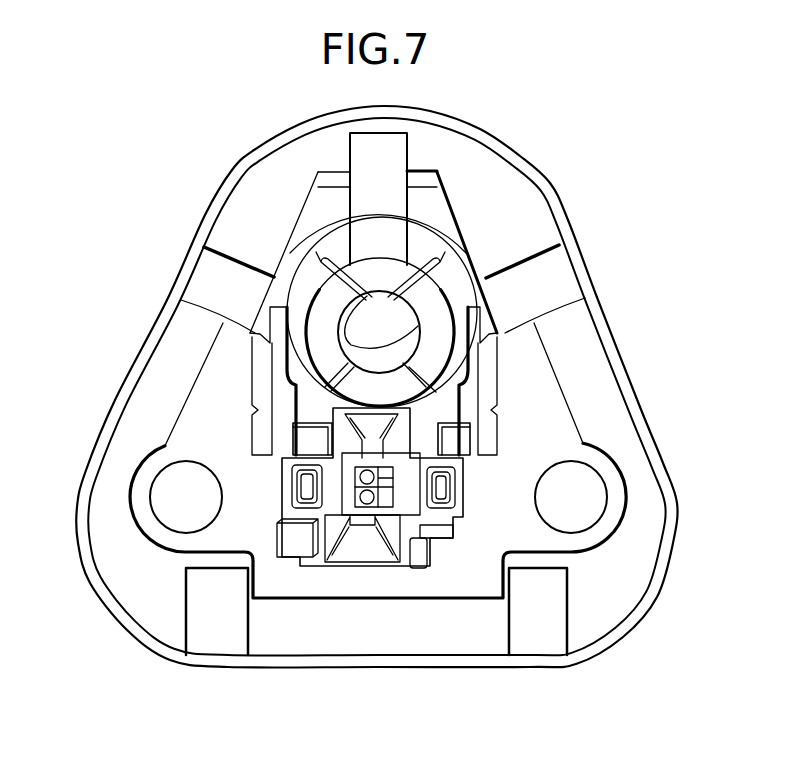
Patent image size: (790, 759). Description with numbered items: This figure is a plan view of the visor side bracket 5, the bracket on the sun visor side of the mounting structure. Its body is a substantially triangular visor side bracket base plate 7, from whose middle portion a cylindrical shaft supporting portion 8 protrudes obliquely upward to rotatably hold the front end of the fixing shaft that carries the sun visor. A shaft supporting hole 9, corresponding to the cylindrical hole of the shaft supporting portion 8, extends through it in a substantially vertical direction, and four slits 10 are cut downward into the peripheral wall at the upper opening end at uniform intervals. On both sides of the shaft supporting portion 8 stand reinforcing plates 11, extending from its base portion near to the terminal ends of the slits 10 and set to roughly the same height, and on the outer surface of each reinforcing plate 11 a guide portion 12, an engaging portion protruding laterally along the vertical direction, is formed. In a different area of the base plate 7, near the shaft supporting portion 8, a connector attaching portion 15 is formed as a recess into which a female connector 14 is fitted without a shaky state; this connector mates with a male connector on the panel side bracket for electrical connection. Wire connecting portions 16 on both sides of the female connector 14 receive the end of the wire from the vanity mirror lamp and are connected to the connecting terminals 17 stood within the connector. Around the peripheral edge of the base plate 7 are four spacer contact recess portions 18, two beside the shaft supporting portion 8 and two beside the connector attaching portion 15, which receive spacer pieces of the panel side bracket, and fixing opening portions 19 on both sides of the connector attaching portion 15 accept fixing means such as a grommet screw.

The visor side bracket 5 is at (592, 249).
The visor side bracket base plate 7 is at (603, 378).
The shaft supporting portion 8 is at (452, 244).
The shaft supporting hole 9 is at (366, 296).
The slits 10 is at (305, 263).
The reinforcing plates 11 is at (272, 323).
The guide portion 12 is at (260, 370).
The female connector 14 is at (382, 524).
The connector attaching portion 15 is at (438, 531).
The wire connecting portions 16 is at (290, 488).
The connecting terminals 17 is at (367, 500).
The spacer contact recess portions 18 is at (188, 310).
The fixing opening portions 19 is at (163, 488).